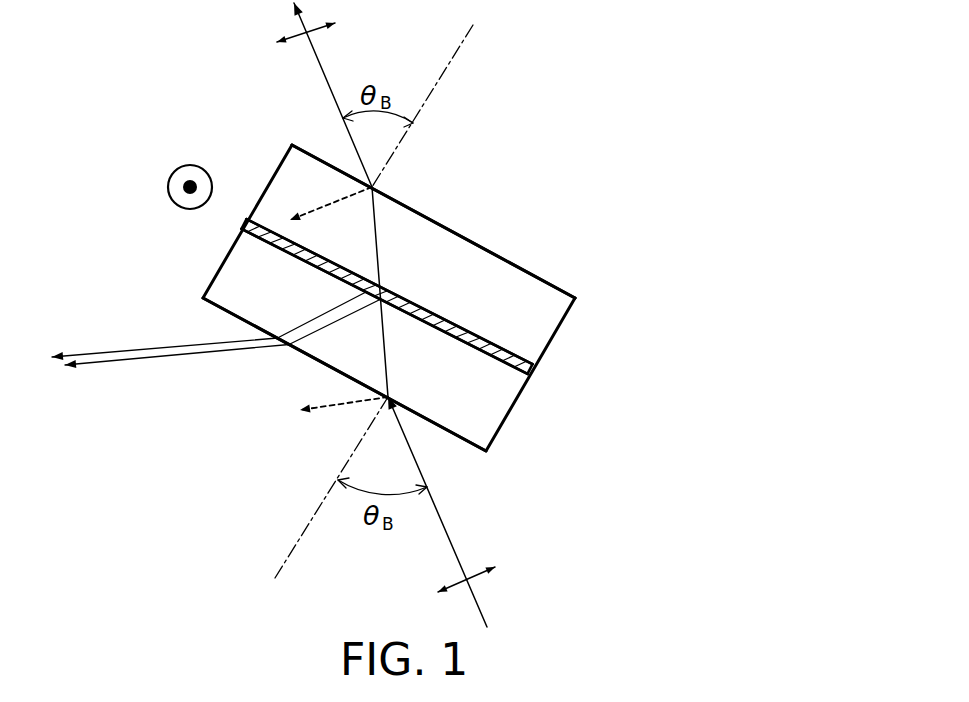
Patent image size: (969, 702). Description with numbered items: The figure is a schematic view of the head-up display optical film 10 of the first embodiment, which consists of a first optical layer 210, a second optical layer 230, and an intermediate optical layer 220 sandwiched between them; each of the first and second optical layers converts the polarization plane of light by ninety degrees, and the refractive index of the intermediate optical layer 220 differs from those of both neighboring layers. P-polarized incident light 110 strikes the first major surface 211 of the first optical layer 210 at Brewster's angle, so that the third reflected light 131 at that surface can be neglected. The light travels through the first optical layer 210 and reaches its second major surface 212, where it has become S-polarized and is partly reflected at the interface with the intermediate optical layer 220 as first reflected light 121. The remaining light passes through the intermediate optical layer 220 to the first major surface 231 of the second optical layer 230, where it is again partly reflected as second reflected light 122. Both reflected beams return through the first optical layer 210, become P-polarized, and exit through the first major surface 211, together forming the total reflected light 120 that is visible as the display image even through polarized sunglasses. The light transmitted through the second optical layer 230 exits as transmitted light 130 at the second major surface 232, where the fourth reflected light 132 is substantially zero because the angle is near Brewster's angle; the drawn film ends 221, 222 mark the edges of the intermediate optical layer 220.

The head-up display optical film 10 is at (672, 175).
The incident light 110 is at (477, 600).
The total reflected light 120 is at (232, 440).
The first reflected light 121 is at (163, 357).
The second reflected light 122 is at (92, 356).
The transmitted light 130 is at (320, 67).
The third reflected light 131 is at (337, 408).
The fourth reflected light 132 is at (327, 203).
The first optical layer 210 is at (495, 412).
The first major surface of the first optical layer 211 is at (450, 432).
The second major surface of the first optical layer 212 is at (512, 375).
The intermediate optical layer 220 is at (522, 378).
The end of polarization separation film 221 is at (243, 226).
The end of polarization separation film 222 is at (245, 220).
The second optical layer 230 is at (548, 327).
The first major surface of the second optical layer 231 is at (530, 363).
The second major surface of the second optical layer 232 is at (555, 285).